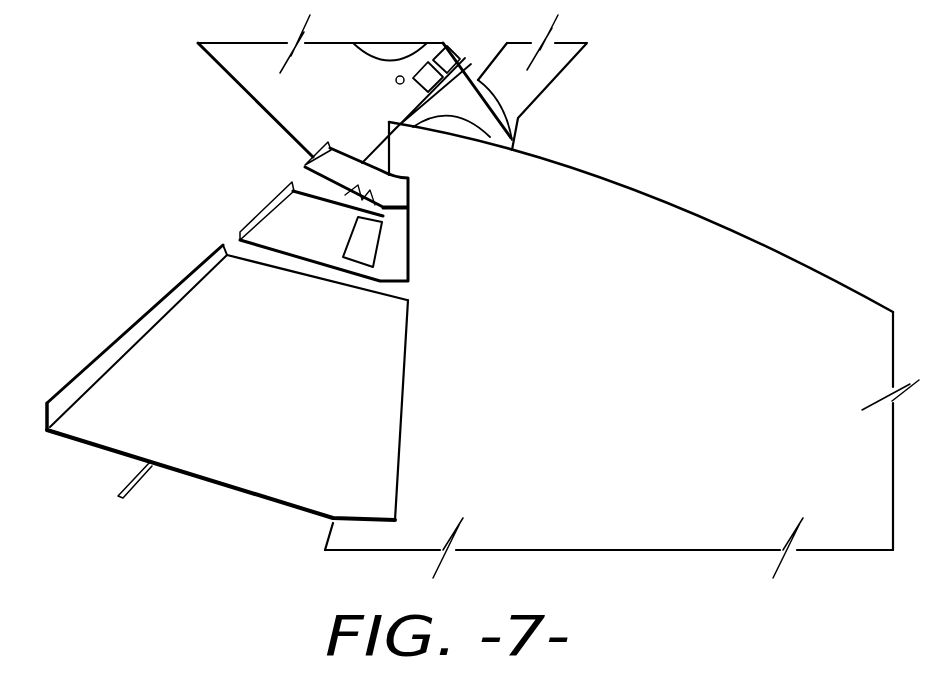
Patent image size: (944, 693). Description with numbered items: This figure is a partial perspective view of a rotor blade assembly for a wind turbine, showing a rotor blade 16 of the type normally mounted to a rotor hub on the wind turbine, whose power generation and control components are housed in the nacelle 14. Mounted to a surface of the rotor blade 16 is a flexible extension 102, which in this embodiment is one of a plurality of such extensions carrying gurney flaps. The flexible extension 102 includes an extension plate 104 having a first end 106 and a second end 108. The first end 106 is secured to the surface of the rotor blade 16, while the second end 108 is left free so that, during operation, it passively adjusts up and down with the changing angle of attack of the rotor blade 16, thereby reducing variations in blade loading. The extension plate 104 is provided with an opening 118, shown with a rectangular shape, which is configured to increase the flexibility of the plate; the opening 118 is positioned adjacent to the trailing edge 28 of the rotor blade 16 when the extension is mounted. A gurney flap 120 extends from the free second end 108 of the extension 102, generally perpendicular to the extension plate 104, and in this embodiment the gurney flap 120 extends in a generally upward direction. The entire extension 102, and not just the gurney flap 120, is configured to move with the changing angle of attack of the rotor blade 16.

The nacelle 14 is at (243, 97).
The rotor blade 16 is at (558, 95).
The trailing edge 28 is at (330, 528).
The flexible extension 102 is at (310, 158).
The extension plate 104 is at (213, 448).
The first end 106 is at (400, 417).
The second end 108 is at (52, 456).
The opening 118 is at (378, 225).
The gurney flap 120 is at (85, 358).